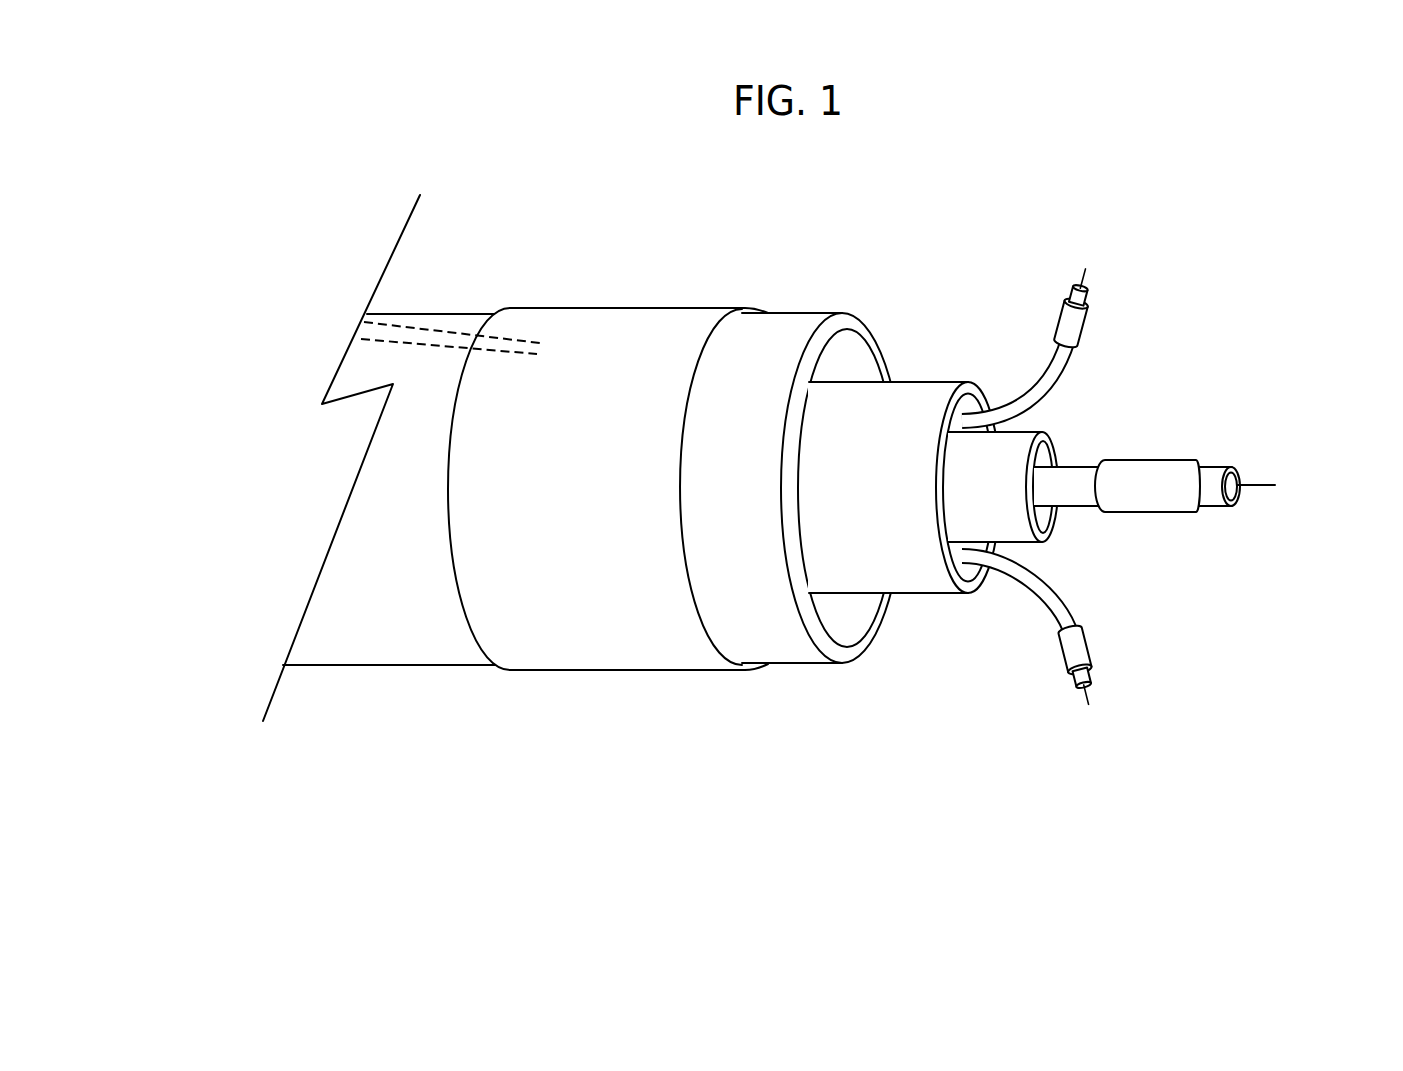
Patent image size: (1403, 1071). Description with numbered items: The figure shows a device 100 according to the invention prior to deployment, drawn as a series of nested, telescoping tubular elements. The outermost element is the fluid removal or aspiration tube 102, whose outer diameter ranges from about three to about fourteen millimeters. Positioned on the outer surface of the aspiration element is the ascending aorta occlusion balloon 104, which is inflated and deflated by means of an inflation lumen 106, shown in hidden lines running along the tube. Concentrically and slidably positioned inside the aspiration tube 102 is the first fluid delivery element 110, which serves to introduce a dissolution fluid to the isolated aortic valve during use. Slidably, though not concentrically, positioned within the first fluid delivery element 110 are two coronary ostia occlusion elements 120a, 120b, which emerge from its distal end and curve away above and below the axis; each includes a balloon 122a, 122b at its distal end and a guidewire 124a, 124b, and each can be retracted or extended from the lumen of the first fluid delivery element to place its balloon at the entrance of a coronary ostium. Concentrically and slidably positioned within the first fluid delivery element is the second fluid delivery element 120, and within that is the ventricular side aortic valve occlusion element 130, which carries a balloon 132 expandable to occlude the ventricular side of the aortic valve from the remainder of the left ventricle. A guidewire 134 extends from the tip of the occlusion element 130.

The device 100 is at (907, 221).
The aspiration tube 102 is at (752, 486).
The ascending aorta occlusion balloon 104 is at (596, 491).
The inflation lumen 106 is at (424, 331).
The first fluid delivery element 110 is at (888, 486).
The second fluid delivery element 120 is at (1005, 484).
The coronary ostia occlusion element 120a is at (1057, 358).
The coronary ostia occlusion element 120b is at (1053, 590).
The balloon 122a is at (1083, 322).
The balloon 122b is at (1075, 648).
The guidewire 124a is at (1088, 279).
The guidewire 124b is at (1095, 697).
The ventricular side aortic valve occlusion element 130 is at (1067, 483).
The balloon 132 is at (1152, 482).
The guidewire 134 is at (1260, 487).